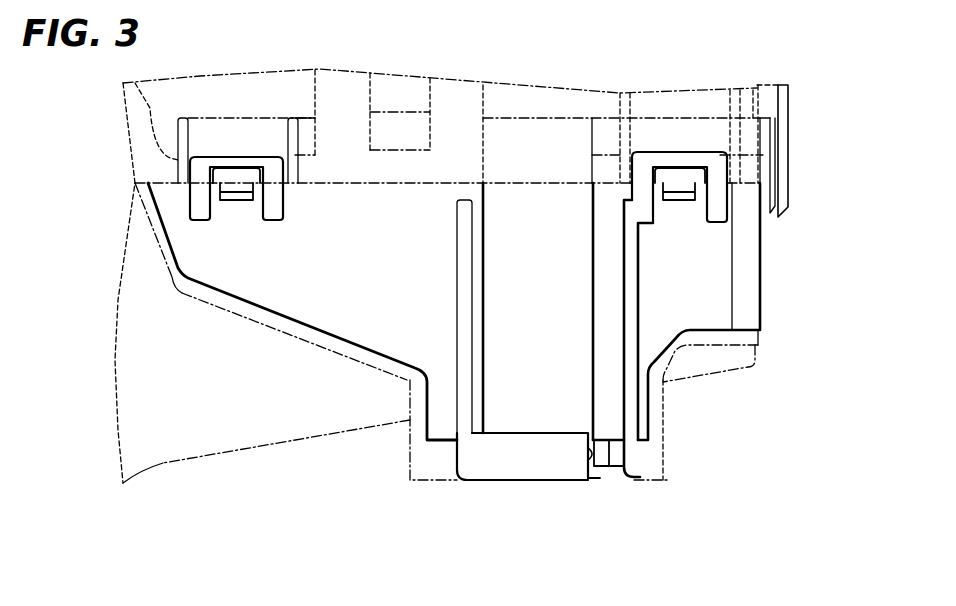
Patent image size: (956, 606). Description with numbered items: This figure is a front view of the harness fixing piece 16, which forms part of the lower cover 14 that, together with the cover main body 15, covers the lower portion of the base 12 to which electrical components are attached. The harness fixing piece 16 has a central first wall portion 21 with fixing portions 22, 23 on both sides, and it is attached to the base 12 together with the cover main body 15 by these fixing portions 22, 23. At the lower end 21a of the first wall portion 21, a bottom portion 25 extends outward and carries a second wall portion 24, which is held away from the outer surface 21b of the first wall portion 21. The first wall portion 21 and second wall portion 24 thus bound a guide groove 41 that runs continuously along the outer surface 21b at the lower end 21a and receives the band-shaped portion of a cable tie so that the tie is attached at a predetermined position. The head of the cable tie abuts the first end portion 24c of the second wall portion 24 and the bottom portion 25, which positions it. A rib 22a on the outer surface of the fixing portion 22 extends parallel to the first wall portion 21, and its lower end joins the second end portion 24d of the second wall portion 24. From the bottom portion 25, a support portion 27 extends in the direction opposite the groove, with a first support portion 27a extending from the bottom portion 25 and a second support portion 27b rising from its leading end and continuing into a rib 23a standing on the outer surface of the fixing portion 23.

The base 12 is at (790, 100).
The lower cover 14 is at (513, 327).
The cover main body 15 is at (226, 452).
The harness fixing piece 16 is at (759, 312).
The first wall portion 21 is at (537, 378).
The lower end 21a is at (520, 482).
The outer surface 21b is at (495, 232).
The fixing portion 22 is at (249, 290).
The rib 22a is at (460, 305).
The fixing portion 23 is at (723, 252).
The rib 23a is at (634, 270).
The second wall portion 24 is at (518, 440).
The first end portion 24c is at (590, 458).
The second end portion 24d is at (459, 473).
The bottom portion 25 is at (490, 481).
The support portion 27 is at (682, 535).
The first support portion 27a is at (603, 472).
The second support portion 27b is at (636, 453).
The guide groove 41 is at (560, 428).